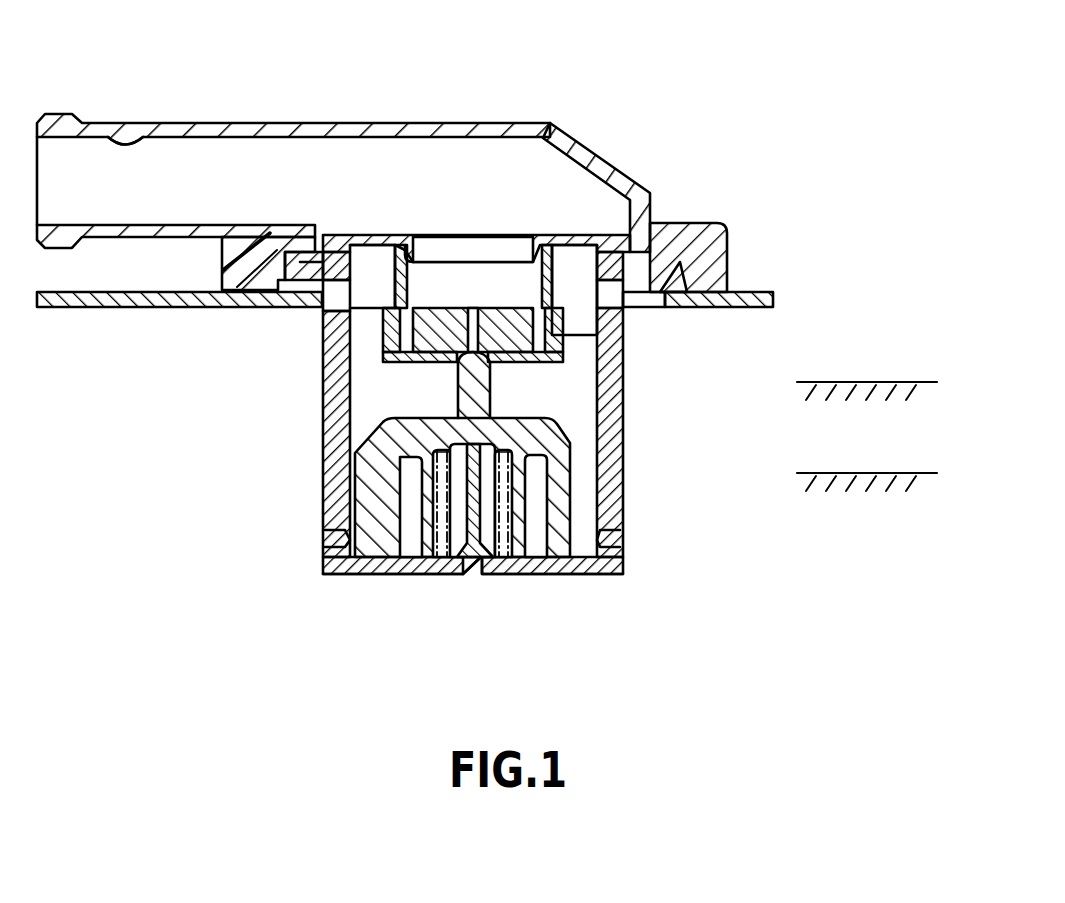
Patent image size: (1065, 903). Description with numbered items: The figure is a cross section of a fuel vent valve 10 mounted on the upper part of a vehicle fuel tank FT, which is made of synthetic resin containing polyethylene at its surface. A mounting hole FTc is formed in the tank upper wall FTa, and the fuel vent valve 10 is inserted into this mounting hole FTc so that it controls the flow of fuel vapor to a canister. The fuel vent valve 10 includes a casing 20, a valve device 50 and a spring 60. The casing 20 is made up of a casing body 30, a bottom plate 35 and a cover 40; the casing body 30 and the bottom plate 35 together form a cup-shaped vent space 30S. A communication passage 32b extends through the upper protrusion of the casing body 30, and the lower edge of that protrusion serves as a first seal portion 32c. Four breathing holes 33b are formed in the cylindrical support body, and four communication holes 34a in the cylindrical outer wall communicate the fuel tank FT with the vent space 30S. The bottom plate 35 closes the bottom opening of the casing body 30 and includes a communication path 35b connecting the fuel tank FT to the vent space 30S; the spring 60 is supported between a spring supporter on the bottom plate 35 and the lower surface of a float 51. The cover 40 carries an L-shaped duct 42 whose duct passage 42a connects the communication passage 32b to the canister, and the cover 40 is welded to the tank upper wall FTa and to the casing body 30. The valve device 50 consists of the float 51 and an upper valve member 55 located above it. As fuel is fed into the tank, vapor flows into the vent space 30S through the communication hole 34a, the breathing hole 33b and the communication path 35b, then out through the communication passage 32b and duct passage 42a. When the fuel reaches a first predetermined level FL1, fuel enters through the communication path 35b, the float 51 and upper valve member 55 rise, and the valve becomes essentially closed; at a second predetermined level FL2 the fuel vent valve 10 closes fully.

The fuel vent valve 10 is at (667, 72).
The casing 20 is at (188, 337).
The casing body 30 is at (322, 430).
The vent space 30S is at (580, 345).
The communication passage 32b is at (465, 255).
The first seal portion 32c is at (433, 248).
The breathing hole 33b is at (397, 290).
The communication hole 34a is at (317, 277).
The bottom plate 35 is at (320, 530).
The communication path 35b is at (531, 567).
The cover 40 is at (170, 240).
The L-shaped duct 42 is at (167, 122).
The duct passage 42a is at (112, 133).
The valve device 50 is at (703, 398).
The float 51 is at (560, 450).
The upper valve member 55 is at (553, 368).
The spring 60 is at (500, 516).
The fuel tank FT is at (767, 291).
The tank upper wall FTa is at (747, 290).
The mounting hole FTc is at (655, 300).
The first predetermined level FL1 is at (870, 473).
The second predetermined level FL2 is at (867, 382).